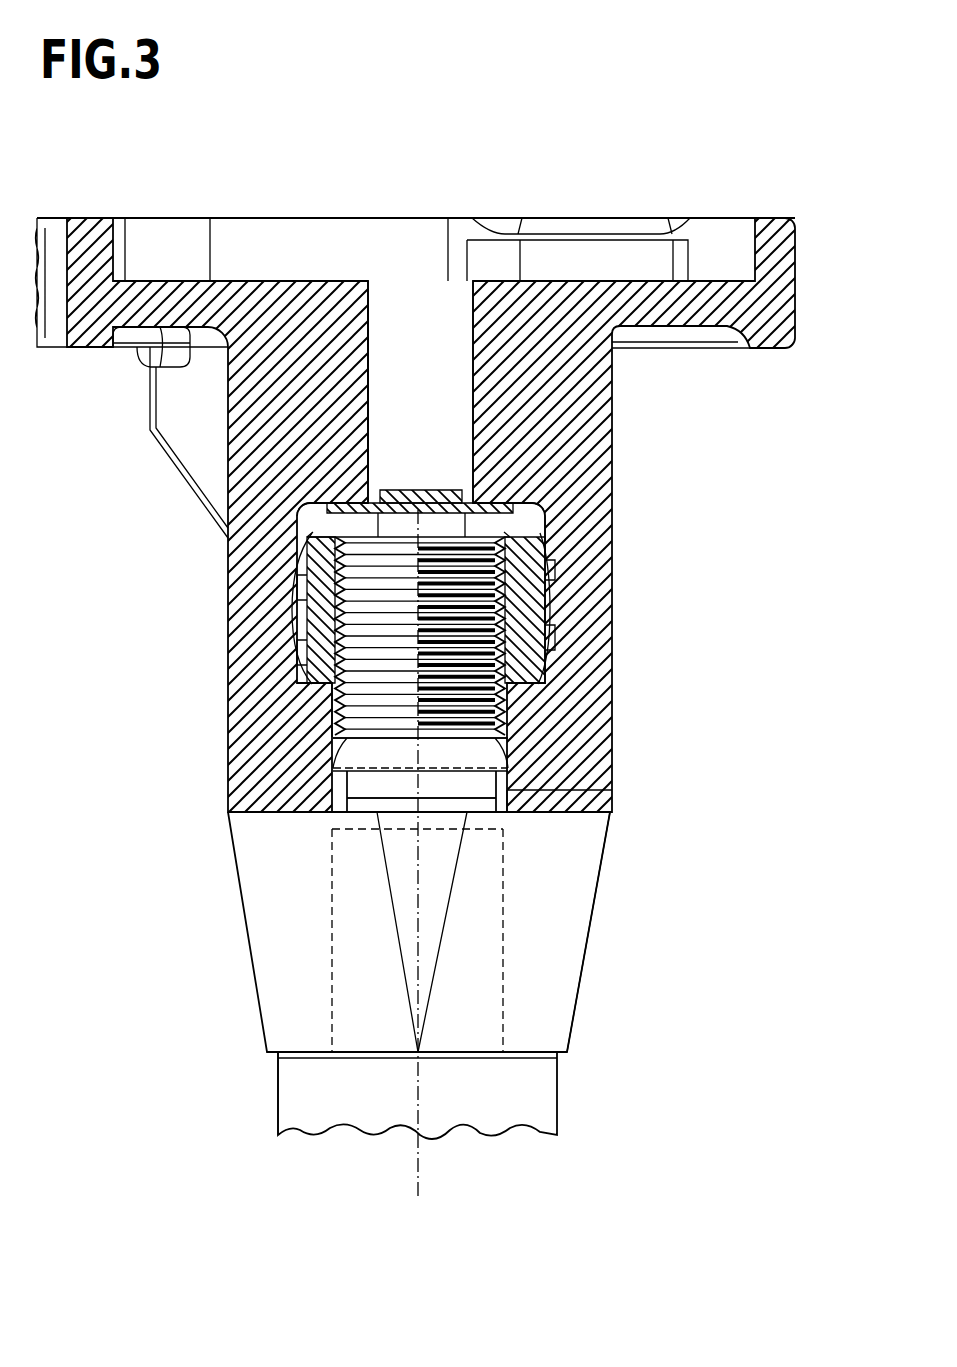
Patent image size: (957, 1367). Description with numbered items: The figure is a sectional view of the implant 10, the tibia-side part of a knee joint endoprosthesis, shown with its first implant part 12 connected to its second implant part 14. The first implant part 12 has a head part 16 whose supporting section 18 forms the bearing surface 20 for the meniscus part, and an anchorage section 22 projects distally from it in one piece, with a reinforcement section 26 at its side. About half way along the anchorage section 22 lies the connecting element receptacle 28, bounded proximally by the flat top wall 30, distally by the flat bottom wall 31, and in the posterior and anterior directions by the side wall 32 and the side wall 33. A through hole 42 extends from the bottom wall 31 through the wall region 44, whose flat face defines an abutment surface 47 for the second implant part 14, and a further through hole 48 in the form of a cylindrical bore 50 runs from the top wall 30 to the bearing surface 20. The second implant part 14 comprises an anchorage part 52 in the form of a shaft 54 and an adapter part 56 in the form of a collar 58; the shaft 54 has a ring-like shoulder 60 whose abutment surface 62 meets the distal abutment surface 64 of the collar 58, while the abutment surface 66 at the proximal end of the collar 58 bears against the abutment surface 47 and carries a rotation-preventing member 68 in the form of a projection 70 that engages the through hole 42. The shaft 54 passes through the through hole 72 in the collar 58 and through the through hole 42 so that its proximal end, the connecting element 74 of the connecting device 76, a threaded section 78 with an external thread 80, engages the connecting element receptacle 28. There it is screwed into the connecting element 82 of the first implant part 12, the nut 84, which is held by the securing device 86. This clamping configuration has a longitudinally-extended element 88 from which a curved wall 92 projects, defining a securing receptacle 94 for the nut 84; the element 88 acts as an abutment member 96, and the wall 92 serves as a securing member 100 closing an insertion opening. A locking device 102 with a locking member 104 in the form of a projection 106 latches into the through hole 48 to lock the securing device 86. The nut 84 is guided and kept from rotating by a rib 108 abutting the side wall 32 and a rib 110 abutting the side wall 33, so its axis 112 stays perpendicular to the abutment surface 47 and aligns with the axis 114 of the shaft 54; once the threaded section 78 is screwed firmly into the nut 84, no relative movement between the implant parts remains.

The implant 10 is at (660, 182).
The first implant part 12 is at (235, 188).
The second implant part 14 is at (555, 1160).
The head part 16 is at (60, 222).
The supporting section 18 is at (165, 245).
The bearing surface 20 is at (290, 270).
The anchorage section 22 is at (612, 410).
The reinforcement section 26 is at (165, 385).
The connecting element receptacle 28 is at (546, 530).
The top wall 30 is at (340, 521).
The bottom wall 31 is at (530, 680).
The side wall 32 is at (300, 590).
The side wall 33 is at (548, 602).
The through hole 42 is at (520, 756).
The wall region 44 is at (605, 800).
The abutment surface 47 is at (535, 820).
The through hole 48 is at (473, 330).
The cylindrical bore 50 is at (380, 300).
The anchorage part 52 is at (280, 1112).
The shaft 54 is at (555, 1122).
The adapter part 56 is at (565, 1030).
The collar 58 is at (570, 988).
The ring-like shoulder 60 is at (285, 1060).
The abutment surface 62 is at (290, 1050).
The distal abutment surface 64 is at (478, 1060).
The abutment surface 66 is at (230, 815).
The rotation-preventing member 68 is at (360, 730).
The projection 70 is at (340, 780).
The through hole 72 is at (500, 920).
The connecting element 74 is at (395, 730).
The connecting device 76 is at (305, 705).
The threaded section 78 is at (430, 760).
The thread 80 is at (325, 720).
The connecting element 82 is at (300, 690).
The nut 84 is at (300, 656).
The securing device 86 is at (485, 500).
The longitudinally-extended element 88 is at (503, 508).
The curved wall 92 is at (300, 525).
The securing receptacle 94 is at (310, 500).
The abutment member 96 is at (515, 515).
The securing member 100 is at (548, 575).
The locking device 102 is at (392, 480).
The locking member 104 is at (410, 490).
The projection 106 is at (447, 502).
The rib 108 is at (300, 620).
The rib 110 is at (548, 636).
The axis 112 is at (440, 876).
The axis 114 is at (405, 1183).